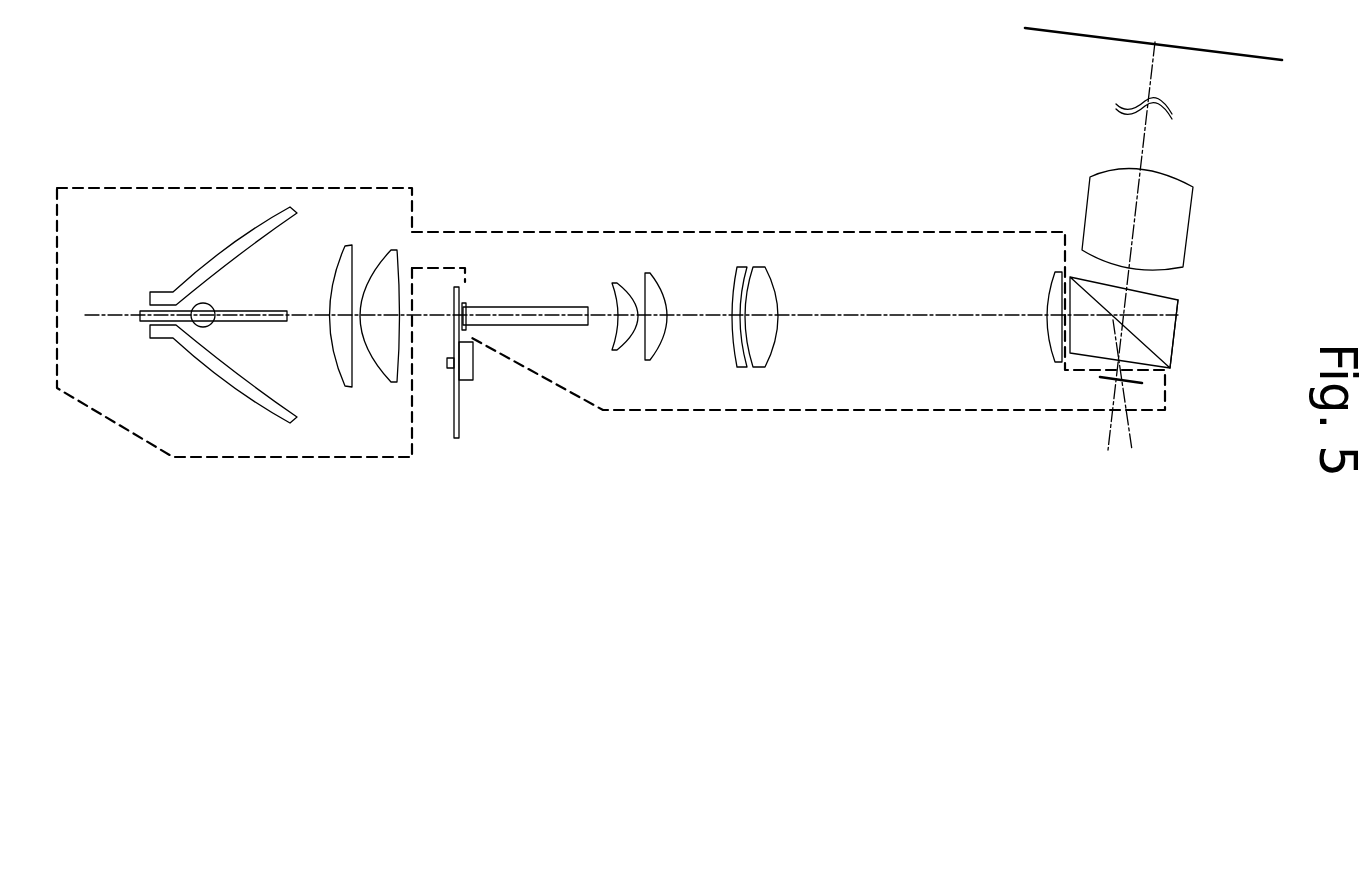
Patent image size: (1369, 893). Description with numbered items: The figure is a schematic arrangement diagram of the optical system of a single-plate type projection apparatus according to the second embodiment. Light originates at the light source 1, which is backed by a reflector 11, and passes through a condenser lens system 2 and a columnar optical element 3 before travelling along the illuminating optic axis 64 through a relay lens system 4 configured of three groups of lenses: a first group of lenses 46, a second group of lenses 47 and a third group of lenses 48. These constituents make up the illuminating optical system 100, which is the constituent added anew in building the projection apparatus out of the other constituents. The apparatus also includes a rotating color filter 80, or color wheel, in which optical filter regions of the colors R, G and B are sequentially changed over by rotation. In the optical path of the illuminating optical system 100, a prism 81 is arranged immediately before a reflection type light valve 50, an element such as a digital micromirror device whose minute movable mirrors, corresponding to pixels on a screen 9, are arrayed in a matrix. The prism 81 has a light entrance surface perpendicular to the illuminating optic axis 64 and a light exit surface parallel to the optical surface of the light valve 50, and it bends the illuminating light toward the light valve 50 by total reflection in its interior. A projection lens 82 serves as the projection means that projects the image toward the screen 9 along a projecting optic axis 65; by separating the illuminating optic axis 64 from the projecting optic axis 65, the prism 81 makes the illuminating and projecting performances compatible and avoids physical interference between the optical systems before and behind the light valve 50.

The light source 1 is at (203, 327).
The reflector 11 is at (250, 227).
The condenser lens system 2 is at (328, 218).
The illuminating optical system 100 is at (412, 197).
The columnar optical element 3 is at (540, 327).
The rotating color filter 80 is at (455, 408).
The relay lens system 4 is at (830, 278).
The first group of lenses 46 is at (675, 363).
The second group of lenses 47 is at (713, 363).
The third group of lenses 48 is at (1036, 343).
The illuminating optic axis 64 is at (860, 315).
The projecting optic axis 65 is at (1128, 278).
The reflection type light valve 50 is at (1107, 381).
The prism 81 is at (1175, 345).
The projection lens 82 is at (1088, 207).
The screen 9 is at (1233, 55).